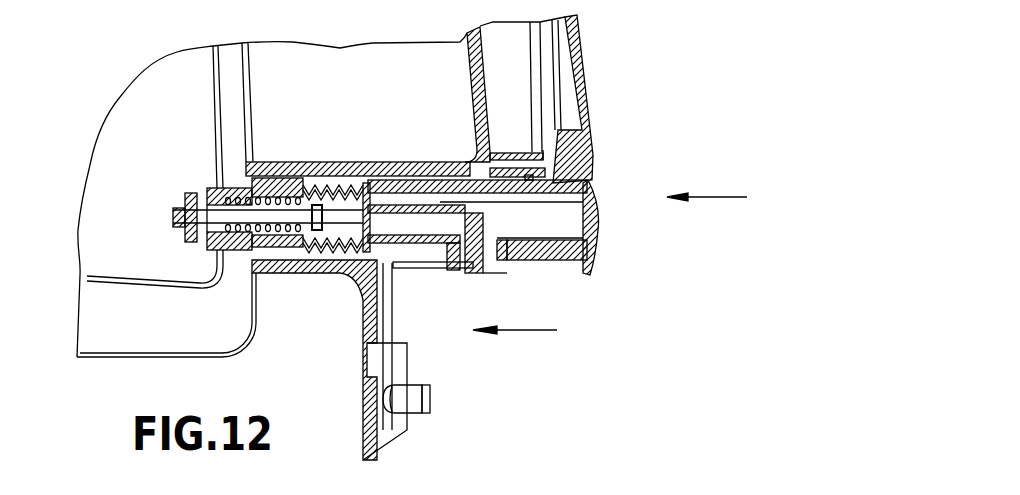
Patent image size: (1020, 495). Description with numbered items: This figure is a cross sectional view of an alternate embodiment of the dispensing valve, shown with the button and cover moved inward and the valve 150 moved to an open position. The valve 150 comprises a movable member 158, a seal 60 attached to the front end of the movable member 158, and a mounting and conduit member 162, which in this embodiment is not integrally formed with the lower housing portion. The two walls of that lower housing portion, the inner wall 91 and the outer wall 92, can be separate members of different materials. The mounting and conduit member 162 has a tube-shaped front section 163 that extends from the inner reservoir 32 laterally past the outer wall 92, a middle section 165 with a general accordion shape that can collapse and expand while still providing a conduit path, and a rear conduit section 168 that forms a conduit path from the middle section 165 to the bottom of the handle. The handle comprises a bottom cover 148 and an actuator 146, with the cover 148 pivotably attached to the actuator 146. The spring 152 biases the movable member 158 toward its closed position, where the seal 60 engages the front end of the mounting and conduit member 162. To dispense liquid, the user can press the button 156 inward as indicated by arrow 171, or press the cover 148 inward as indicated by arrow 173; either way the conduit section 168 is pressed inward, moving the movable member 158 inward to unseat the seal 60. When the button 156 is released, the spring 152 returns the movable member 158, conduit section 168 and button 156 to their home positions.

The inner reservoir 32 is at (196, 101).
The seal 60 is at (183, 240).
The inner wall 91 is at (107, 283).
The outer wall 92 is at (100, 357).
The actuator 146 is at (597, 203).
The bottom cover 148 is at (430, 407).
The valve 150 is at (173, 213).
The spring 152 is at (285, 214).
The button 156 is at (597, 237).
The movable member 158 is at (282, 218).
The mounting and conduit member 162 is at (373, 163).
The front section 163 is at (208, 186).
The middle section 165 is at (335, 184).
The rear conduit section 168 is at (487, 263).
The arrow 171 is at (713, 197).
The arrow 173 is at (533, 330).